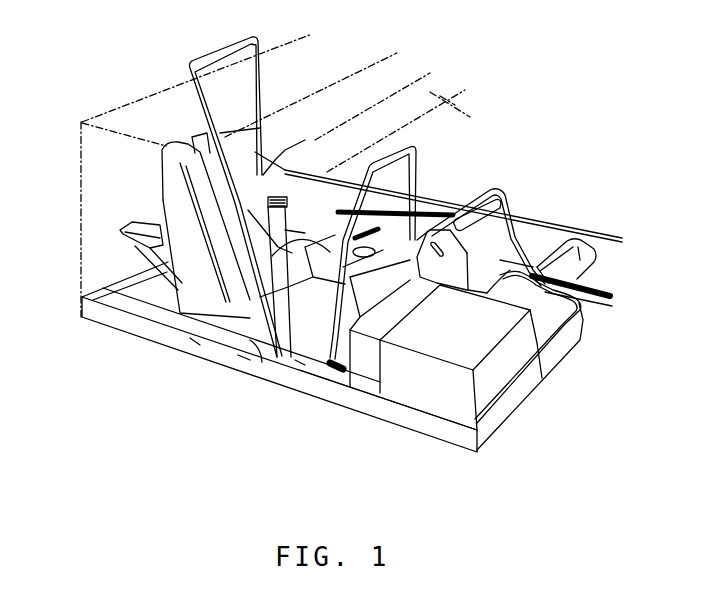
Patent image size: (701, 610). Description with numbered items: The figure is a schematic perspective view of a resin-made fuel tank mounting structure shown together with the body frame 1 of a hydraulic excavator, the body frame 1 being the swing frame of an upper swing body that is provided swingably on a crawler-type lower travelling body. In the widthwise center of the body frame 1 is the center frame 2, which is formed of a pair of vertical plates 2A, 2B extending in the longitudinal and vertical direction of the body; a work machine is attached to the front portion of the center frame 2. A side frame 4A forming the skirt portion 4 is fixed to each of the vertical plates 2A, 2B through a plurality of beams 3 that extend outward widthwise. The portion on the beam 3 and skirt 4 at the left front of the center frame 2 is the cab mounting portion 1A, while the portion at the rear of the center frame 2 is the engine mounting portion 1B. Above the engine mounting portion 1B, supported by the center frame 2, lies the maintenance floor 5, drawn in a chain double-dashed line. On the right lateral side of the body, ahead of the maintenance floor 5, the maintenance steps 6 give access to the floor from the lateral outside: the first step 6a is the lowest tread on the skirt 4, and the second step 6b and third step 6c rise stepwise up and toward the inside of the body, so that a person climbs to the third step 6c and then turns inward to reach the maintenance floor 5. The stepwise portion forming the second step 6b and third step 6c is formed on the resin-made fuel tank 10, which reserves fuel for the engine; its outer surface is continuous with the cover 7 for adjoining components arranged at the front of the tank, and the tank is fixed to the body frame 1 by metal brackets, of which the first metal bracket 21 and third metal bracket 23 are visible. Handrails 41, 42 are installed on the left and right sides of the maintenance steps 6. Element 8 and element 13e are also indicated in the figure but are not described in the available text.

The body frame 1 is at (598, 360).
The cab mounting portion 1A is at (541, 245).
The engine mounting portion 1B is at (125, 252).
The center frame 2 is at (447, 281).
The vertical plate 2A is at (464, 258).
The vertical plate 2B is at (472, 204).
The beam 3 is at (578, 247).
The skirt portion 4 is at (518, 412).
The side frame 4A is at (433, 430).
The maintenance floor 5 is at (452, 104).
The maintenance steps 6 is at (224, 368).
The first step 6a is at (300, 356).
The second step 6b is at (297, 329).
The third step 6c is at (190, 347).
The cover 7 is at (527, 345).
The seat back 8 is at (266, 94).
The resin-made fuel tank 10 is at (390, 220).
The bolt 13e is at (283, 195).
The first metal bracket 21 is at (310, 366).
The third metal bracket 23 is at (368, 203).
The handrail 41 is at (418, 149).
The handrail 42 is at (187, 64).